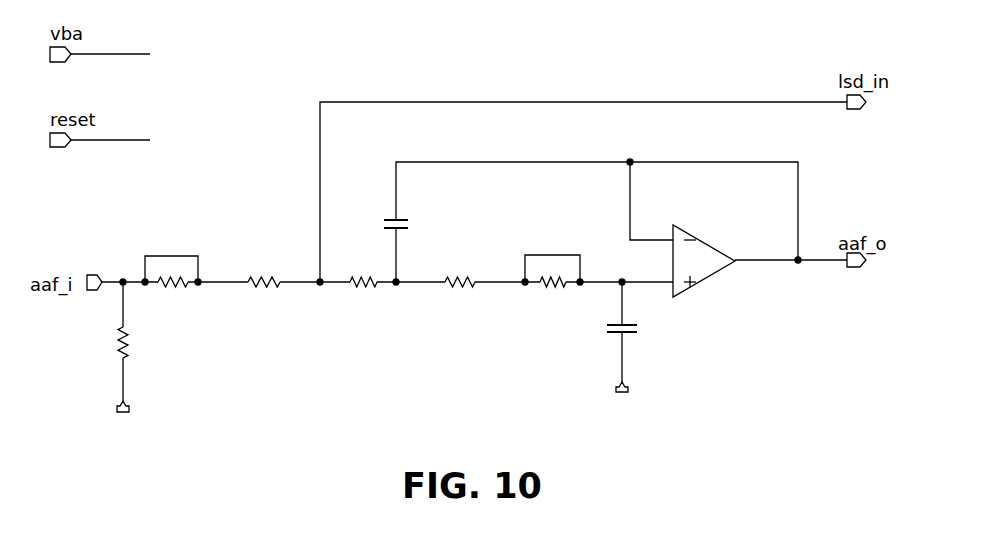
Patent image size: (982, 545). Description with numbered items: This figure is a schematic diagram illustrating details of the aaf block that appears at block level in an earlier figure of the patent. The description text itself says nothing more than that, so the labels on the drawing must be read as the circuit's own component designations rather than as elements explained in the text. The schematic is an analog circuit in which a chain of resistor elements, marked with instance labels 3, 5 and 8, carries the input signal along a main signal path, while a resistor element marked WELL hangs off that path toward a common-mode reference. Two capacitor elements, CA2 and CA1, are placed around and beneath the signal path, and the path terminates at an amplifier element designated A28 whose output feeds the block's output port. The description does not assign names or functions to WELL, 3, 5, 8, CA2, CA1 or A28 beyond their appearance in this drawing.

The well resistor r=50K WELL is at (91, 361).
The resistor r=18.842K 5 is at (360, 304).
The resistor r=11.304K 3 is at (259, 287).
The resistor r=30.146K 8 is at (452, 286).
The feedback capacitor c=13.266p CA2 is at (591, 222).
The capacitor c=5.689p CA1 is at (665, 353).
The operational amplifier PREAMP2 A28 is at (732, 255).